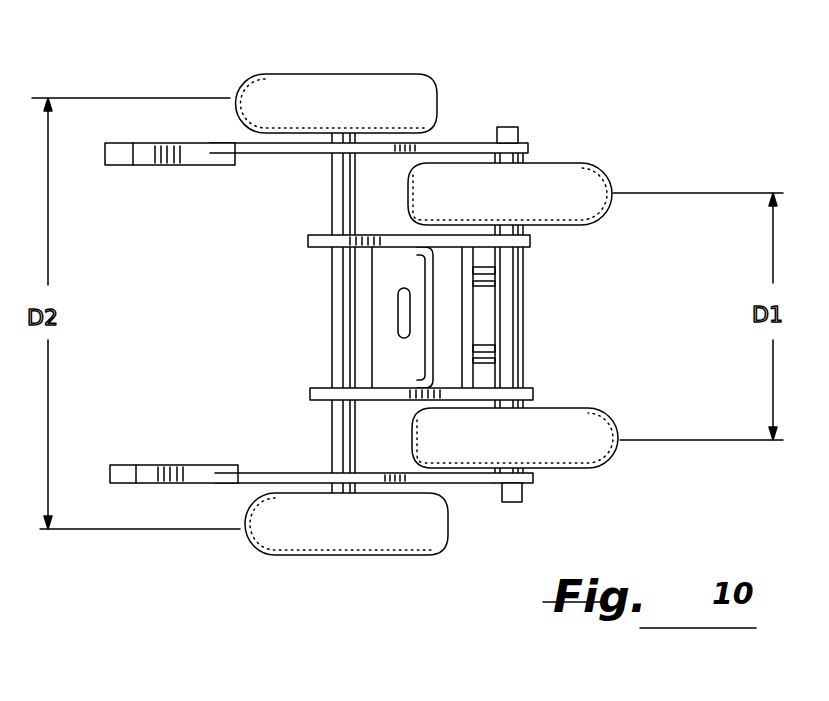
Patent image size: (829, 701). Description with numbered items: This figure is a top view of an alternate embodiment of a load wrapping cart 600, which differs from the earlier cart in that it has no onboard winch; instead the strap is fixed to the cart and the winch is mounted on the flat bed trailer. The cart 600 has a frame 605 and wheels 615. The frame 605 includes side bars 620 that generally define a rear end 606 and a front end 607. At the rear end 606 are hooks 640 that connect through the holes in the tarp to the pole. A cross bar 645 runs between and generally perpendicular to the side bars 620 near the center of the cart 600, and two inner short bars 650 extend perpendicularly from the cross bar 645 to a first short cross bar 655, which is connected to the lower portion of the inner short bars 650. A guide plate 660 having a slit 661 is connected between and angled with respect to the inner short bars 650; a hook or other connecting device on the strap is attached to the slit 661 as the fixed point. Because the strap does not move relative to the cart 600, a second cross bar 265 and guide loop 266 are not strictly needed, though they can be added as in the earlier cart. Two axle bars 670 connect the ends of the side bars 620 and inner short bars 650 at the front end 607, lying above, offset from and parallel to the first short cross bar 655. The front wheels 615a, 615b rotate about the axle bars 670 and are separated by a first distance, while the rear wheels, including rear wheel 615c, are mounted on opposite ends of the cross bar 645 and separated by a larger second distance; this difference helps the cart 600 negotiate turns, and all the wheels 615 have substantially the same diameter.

The load wrapping cart 600 is at (632, 50).
The frame 605 is at (502, 97).
The rear end 606 is at (248, 328).
The front end 607 is at (630, 320).
The wheels 615 is at (272, 540).
The front wheel 615a is at (590, 180).
The front wheel 615b is at (587, 453).
The rear wheel 615c is at (250, 83).
The side bars 620 is at (453, 147).
The hooks 640 is at (123, 167).
The cross bar 645 is at (333, 437).
The inner short bars 650 is at (320, 240).
The first short cross bar 655 is at (507, 367).
The guide plate 660 is at (397, 355).
The slit 661 is at (400, 287).
The second cross bar 265 is at (473, 303).
The guide loop 266 is at (484, 255).
The axle bars 670 is at (527, 155).